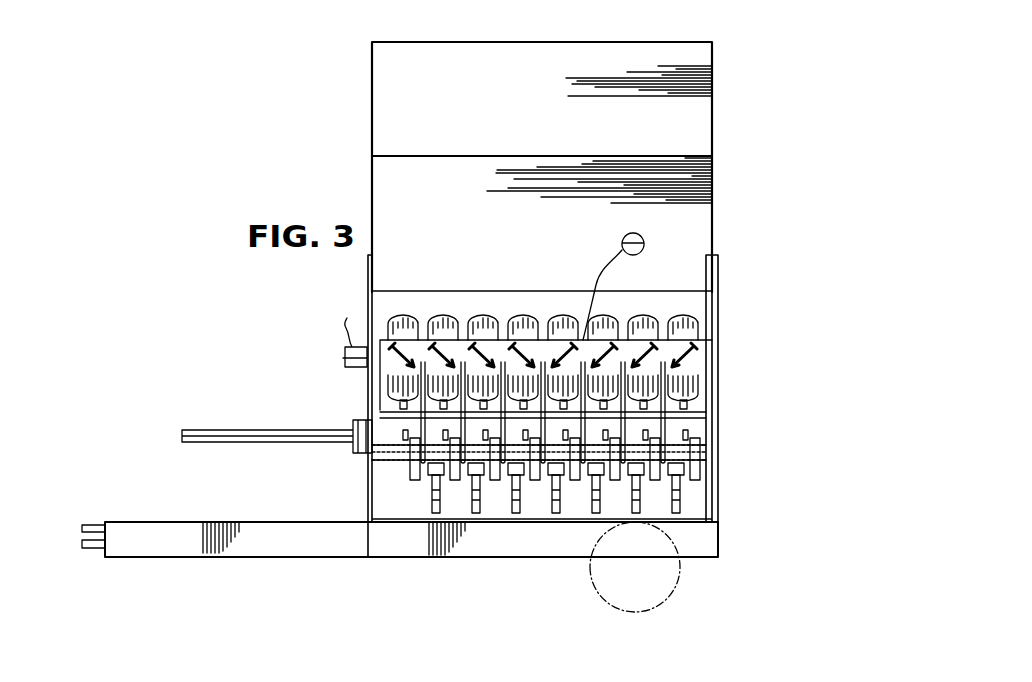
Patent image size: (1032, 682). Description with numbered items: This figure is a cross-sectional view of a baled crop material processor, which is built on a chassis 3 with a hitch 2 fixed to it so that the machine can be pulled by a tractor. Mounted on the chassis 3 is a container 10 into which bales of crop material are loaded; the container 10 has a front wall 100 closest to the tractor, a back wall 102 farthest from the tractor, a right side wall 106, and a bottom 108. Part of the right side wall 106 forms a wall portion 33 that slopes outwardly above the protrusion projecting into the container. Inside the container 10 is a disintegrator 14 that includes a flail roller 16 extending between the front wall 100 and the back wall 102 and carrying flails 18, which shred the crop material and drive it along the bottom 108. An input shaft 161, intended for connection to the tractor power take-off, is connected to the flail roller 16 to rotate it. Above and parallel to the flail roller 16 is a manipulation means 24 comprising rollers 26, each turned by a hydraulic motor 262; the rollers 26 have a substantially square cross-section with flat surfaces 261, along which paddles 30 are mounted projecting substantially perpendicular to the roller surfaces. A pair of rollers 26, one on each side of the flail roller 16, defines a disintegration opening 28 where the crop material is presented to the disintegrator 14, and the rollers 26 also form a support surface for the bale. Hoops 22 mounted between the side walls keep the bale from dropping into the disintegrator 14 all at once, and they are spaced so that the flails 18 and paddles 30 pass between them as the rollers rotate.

The right side wall 106 is at (712, 44).
The wall portion 33 is at (712, 188).
The manipulation means 24 is at (663, 308).
The paddles 30 is at (403, 318).
The flat surfaces 261 is at (541, 347).
The hydraulic motor 262 is at (345, 335).
The rollers 26 is at (690, 378).
The hoops 22 is at (700, 412).
The disintegration opening 28 is at (690, 428).
The flail roller 16 is at (405, 413).
The front wall 100 is at (370, 476).
The disintegrator 14 is at (695, 463).
The flails 18 is at (436, 515).
The container 10 is at (370, 497).
The input shaft 161 is at (222, 432).
The chassis 3 is at (382, 542).
The bottom 108 is at (533, 525).
The hitch 2 is at (120, 557).
The back wall 102 is at (730, 536).